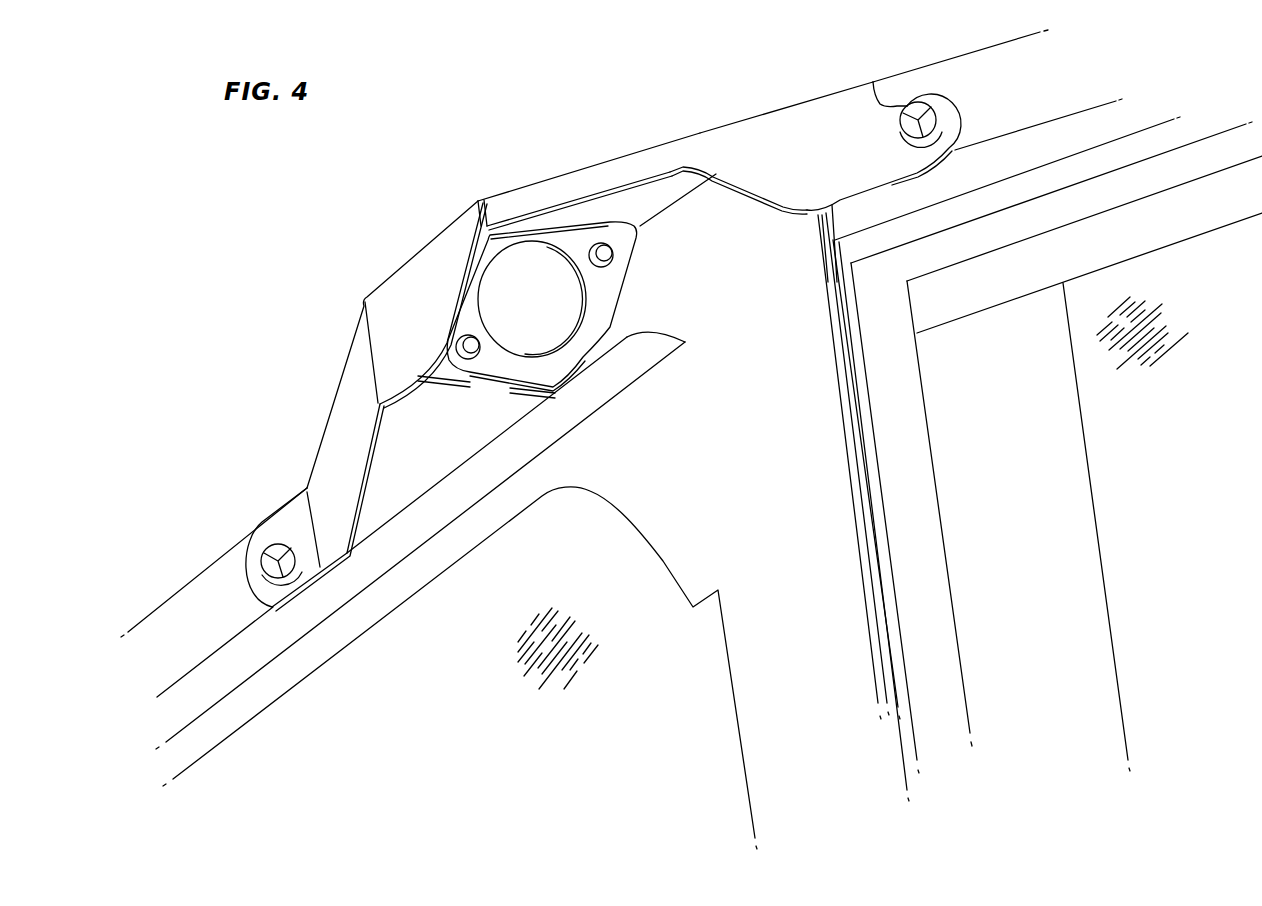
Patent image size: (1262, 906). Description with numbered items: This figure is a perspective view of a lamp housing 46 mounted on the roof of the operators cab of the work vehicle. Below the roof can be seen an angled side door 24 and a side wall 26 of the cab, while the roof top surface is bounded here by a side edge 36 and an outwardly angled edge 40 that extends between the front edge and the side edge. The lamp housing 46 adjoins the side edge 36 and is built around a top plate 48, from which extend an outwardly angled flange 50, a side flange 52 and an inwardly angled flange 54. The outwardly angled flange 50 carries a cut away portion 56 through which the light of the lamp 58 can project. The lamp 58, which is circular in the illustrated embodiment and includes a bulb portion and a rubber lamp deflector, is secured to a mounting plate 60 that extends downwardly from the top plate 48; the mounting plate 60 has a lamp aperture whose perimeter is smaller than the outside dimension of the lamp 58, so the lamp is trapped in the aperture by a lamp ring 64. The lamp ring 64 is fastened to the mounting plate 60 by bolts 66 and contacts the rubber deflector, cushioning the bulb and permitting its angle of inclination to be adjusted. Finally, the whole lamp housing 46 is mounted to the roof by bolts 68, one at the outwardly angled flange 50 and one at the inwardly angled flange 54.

The angled side door 24 is at (1194, 458).
The side wall 26 is at (438, 743).
The side edge 36 is at (176, 600).
The outwardly angled edge 40 is at (955, 72).
The lamp housing 46 is at (707, 90).
The top plate 48 is at (598, 197).
The outwardly angled flange 50 is at (846, 97).
The side flange 52 is at (401, 270).
The inwardly angled flange 54 is at (340, 391).
The cut away portion 56 is at (657, 258).
The lamp 58 is at (570, 302).
The mounting plate 60 is at (440, 385).
The lamp ring 64 is at (567, 353).
The bolts 66 is at (608, 246).
The bolts 68 is at (268, 556).